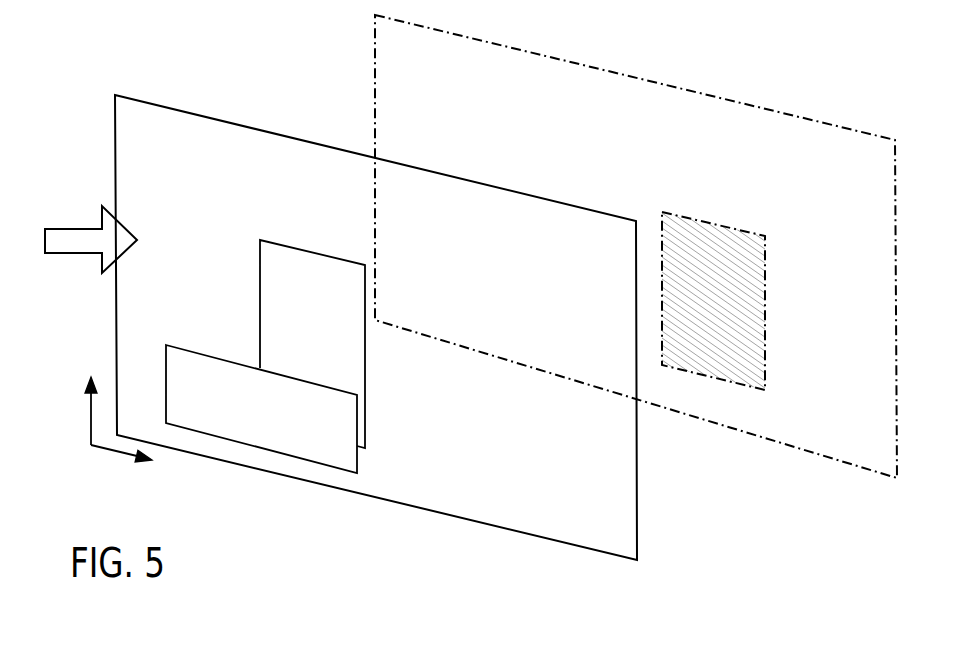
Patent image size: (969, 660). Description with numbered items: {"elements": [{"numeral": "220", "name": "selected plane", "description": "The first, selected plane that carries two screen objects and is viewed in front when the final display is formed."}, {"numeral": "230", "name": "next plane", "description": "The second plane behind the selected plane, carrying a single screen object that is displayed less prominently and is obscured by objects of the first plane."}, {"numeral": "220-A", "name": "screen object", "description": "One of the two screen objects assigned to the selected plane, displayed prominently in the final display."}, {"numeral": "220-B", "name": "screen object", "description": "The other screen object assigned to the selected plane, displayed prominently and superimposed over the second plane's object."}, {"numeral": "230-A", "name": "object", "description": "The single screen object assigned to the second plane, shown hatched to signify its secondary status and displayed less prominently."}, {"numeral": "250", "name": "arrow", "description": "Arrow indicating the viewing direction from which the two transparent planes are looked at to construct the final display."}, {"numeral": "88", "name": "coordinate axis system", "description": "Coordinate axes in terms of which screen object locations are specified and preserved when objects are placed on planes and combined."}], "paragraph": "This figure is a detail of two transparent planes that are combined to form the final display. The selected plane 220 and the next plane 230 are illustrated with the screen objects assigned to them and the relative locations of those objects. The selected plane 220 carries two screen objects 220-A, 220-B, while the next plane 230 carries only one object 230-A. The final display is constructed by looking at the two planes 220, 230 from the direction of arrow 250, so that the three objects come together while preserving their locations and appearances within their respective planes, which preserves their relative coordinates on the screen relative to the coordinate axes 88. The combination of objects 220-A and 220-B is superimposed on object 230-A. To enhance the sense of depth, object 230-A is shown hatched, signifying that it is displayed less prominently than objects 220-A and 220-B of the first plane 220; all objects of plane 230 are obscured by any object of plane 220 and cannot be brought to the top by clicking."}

The display screen / first virtual layer 220 is at (642, 569).
The second virtual layer (dash-dot plane) 230 is at (888, 482).
The mail composer window 220-A is at (229, 349).
The mail reader window 220-B is at (310, 235).
The internet viewing window 230-A is at (739, 221).
The viewing direction arrow 250 is at (57, 243).
The X-Y coordinate axes 88 is at (108, 462).